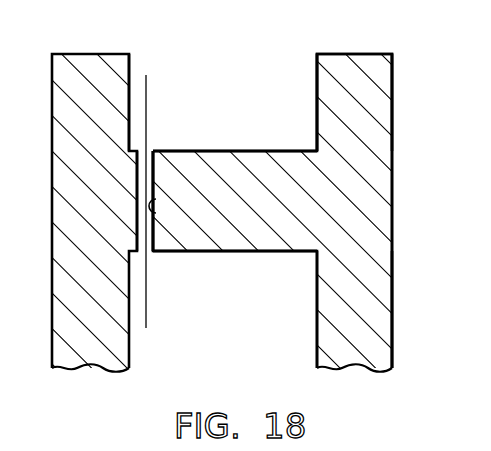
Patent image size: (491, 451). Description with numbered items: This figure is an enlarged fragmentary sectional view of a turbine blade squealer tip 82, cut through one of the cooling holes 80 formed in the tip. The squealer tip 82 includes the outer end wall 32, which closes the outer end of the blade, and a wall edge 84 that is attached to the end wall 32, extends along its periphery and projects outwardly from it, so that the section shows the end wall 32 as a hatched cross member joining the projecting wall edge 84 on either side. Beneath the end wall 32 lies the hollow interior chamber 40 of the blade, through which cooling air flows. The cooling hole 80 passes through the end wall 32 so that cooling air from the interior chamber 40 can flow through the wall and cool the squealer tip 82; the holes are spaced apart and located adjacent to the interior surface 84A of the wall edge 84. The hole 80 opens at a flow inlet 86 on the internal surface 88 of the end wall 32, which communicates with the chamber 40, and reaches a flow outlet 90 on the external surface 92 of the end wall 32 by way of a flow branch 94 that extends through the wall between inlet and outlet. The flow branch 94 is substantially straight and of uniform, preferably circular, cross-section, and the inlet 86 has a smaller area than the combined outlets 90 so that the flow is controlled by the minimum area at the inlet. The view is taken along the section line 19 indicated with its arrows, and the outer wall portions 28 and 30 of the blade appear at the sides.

The section line 19- 19 is at (100, 298).
The left wall / first member 28 is at (52, 205).
The lower portion of second member 30 is at (393, 298).
The outer end wall 32 is at (260, 213).
The hollow interior chamber 40 is at (229, 344).
The cooling hole 80 is at (167, 183).
The squealer tip 82 is at (398, 183).
The wall edge 84 is at (393, 125).
The interior surface of the wall edge 84A is at (317, 85).
The flow inlet 86 is at (150, 252).
The internal surface 88 is at (280, 253).
The flow outlet 90 is at (147, 152).
The external surface 92 is at (295, 150).
The flow branch 94 is at (156, 203).